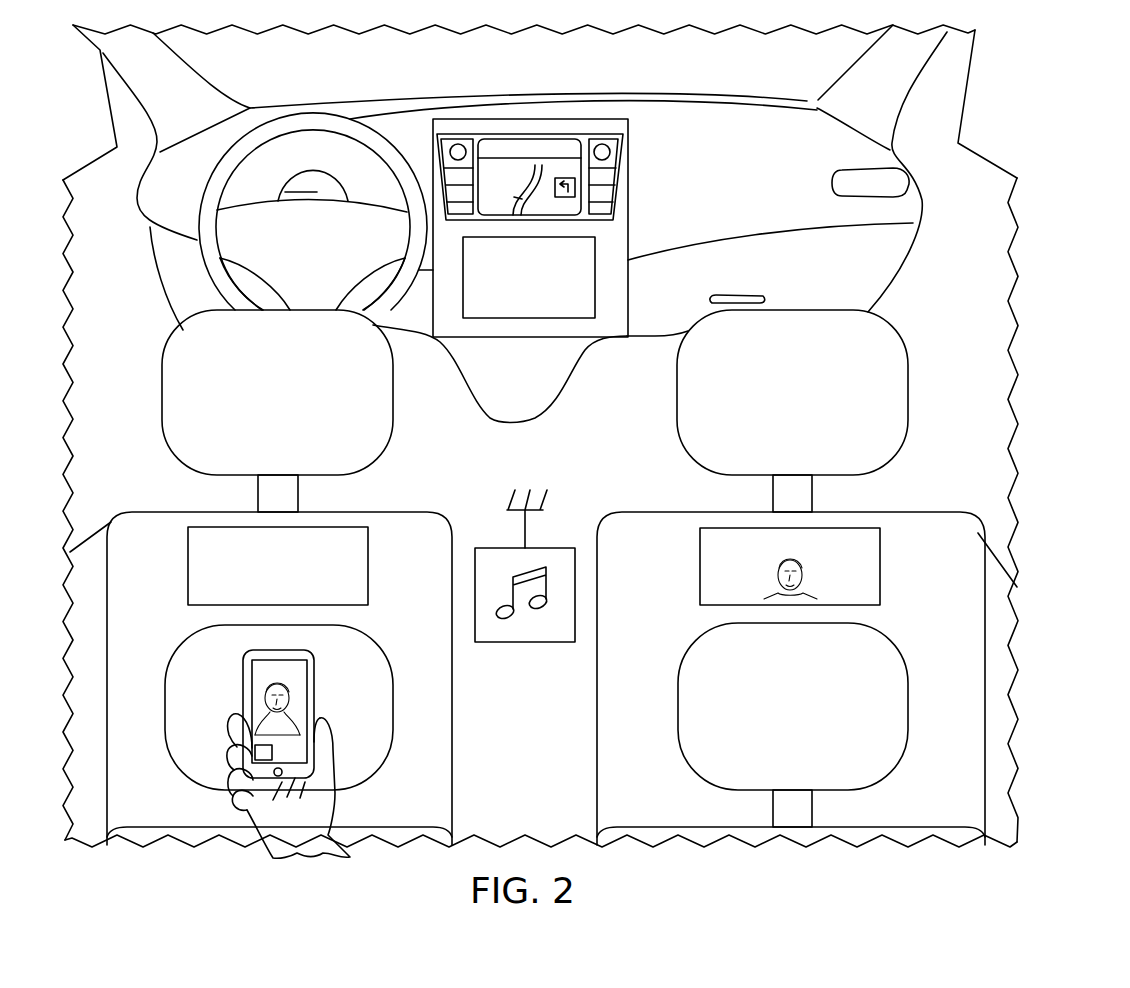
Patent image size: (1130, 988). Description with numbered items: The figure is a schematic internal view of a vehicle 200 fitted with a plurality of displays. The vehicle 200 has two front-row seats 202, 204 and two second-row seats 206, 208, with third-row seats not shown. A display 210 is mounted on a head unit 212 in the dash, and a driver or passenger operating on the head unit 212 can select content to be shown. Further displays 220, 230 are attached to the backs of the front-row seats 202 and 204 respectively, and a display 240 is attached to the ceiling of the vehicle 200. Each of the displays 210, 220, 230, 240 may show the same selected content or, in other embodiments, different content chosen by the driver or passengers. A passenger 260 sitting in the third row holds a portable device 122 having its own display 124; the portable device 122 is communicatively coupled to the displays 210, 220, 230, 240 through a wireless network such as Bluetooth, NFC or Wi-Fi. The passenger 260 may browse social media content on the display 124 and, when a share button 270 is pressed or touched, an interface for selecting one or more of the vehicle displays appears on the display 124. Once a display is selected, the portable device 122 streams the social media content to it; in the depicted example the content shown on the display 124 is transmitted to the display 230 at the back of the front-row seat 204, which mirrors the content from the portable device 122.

The vehicle 200 is at (1043, 146).
The front-row seat 202 is at (150, 512).
The front-row seat 204 is at (930, 510).
The second-row seat 206 is at (150, 827).
The second-row seat 208 is at (930, 827).
The display 210 is at (540, 134).
The head unit 212 is at (628, 210).
The display 220 is at (368, 568).
The display 230 is at (882, 568).
The display 240 is at (525, 643).
The portable device 122 is at (316, 708).
The display 124 is at (297, 690).
The passenger 260 is at (338, 817).
The share button 270 is at (253, 750).